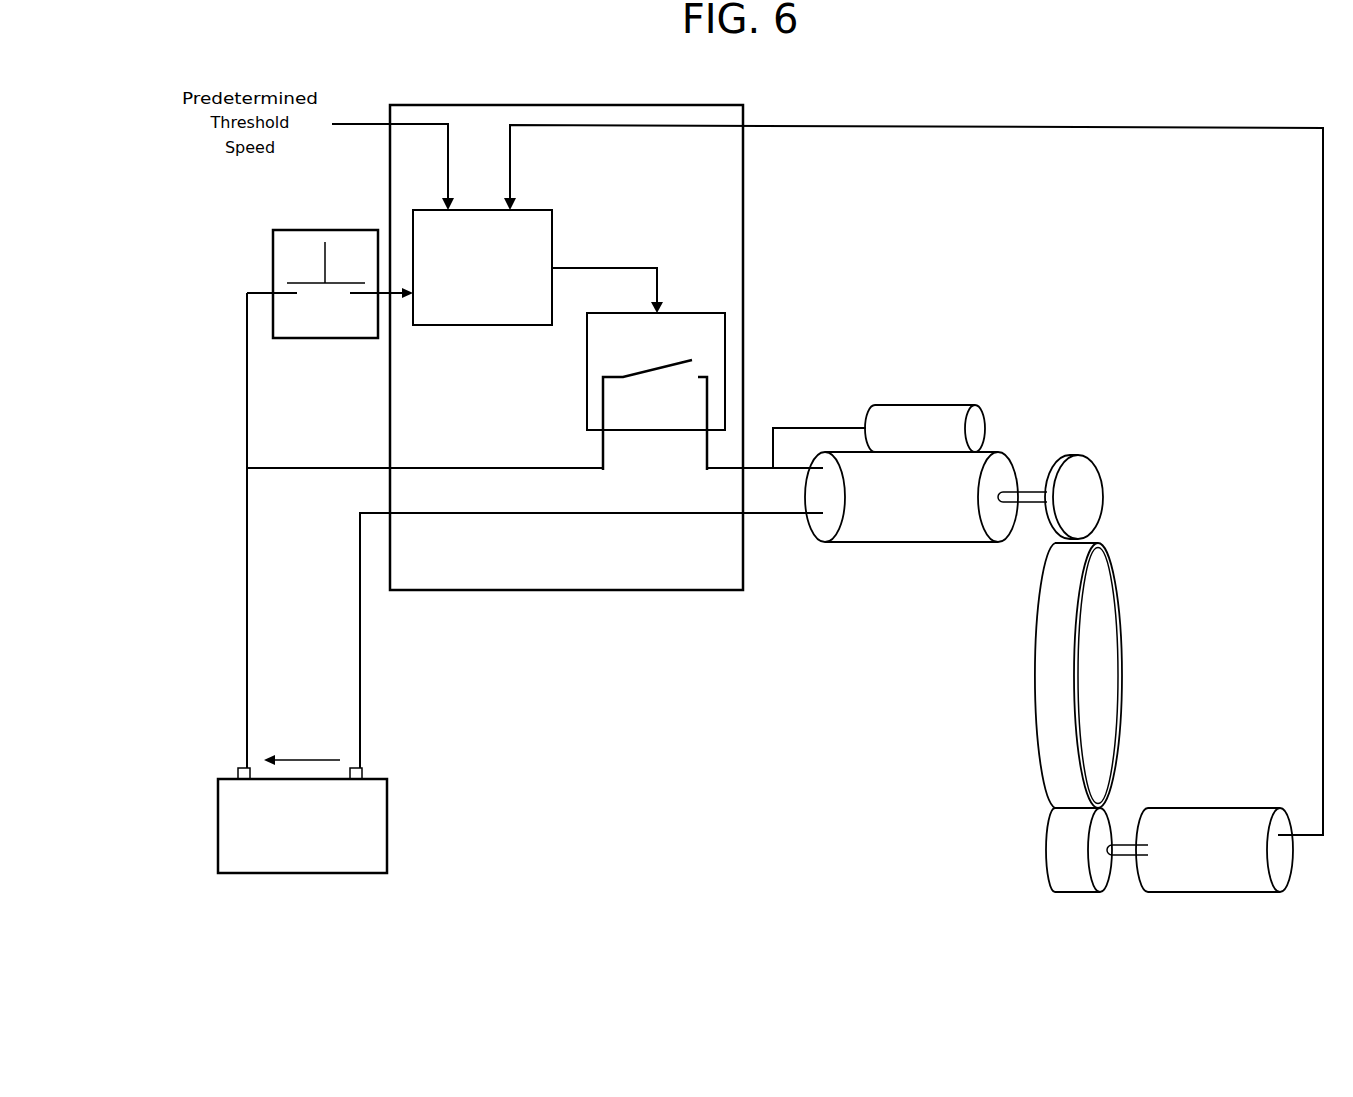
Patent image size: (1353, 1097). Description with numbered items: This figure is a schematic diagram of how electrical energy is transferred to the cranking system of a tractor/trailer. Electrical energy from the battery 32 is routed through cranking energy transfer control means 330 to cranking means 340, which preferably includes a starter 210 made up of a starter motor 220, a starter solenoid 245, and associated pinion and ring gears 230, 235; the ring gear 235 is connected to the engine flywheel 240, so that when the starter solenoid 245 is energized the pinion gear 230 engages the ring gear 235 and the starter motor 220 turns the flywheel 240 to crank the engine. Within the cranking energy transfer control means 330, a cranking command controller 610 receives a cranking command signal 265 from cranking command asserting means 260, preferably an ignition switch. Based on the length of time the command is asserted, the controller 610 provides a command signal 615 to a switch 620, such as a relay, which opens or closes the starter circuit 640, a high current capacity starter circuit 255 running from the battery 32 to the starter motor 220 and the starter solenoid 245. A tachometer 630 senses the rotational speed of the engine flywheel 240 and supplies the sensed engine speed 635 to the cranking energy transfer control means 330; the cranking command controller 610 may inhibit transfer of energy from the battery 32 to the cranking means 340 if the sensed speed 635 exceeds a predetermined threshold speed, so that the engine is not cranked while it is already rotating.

The battery 32 is at (388, 802).
The starter 210 is at (912, 568).
The starter motor 220 is at (852, 528).
The pinion gear 230 is at (1060, 465).
The ring gear 235 is at (1052, 658).
The engine flywheel 240 is at (1107, 660).
The starter solenoid 245 is at (915, 412).
The starter circuit 255 is at (328, 465).
The cranking command asserting means 260 is at (273, 270).
The cranking command signal 265 is at (395, 297).
The cranking energy transfer control means 330 is at (577, 593).
The cranking means 340 is at (950, 312).
The cranking command controller 610 is at (552, 232).
The command signal 615 is at (658, 280).
The switch 620 is at (725, 348).
The tachometer 630 is at (1223, 807).
The sensed engine speed 635 is at (940, 127).
The starter circuit 640 is at (415, 122).